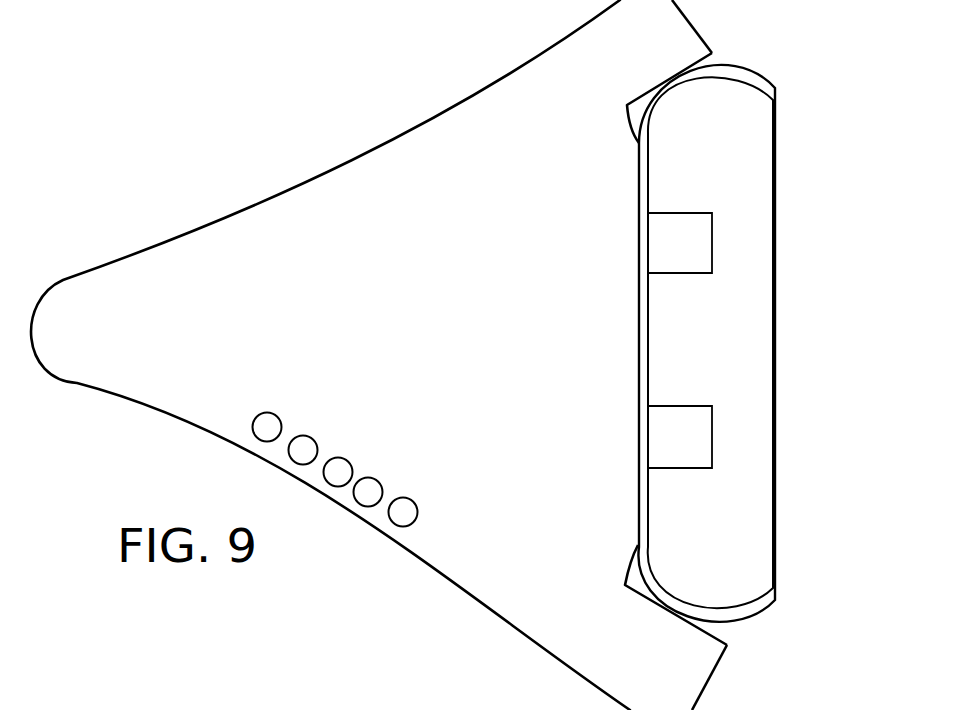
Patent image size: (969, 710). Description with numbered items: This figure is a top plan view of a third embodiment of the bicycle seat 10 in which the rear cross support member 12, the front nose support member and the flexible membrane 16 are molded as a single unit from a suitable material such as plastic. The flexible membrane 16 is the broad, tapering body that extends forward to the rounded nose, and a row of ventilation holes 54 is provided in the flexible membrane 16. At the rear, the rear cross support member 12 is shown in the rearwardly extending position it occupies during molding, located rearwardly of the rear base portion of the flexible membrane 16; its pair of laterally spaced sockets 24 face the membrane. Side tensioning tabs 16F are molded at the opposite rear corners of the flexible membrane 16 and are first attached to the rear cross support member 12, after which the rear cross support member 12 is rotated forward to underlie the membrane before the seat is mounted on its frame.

The bicycle seat 10 is at (405, 355).
The rear cross support member 12 is at (733, 343).
The flexible membrane 16 is at (418, 557).
The side tensioning tabs 16F is at (687, 28).
The sockets 24 is at (688, 212).
The ventilation holes 54 is at (281, 414).